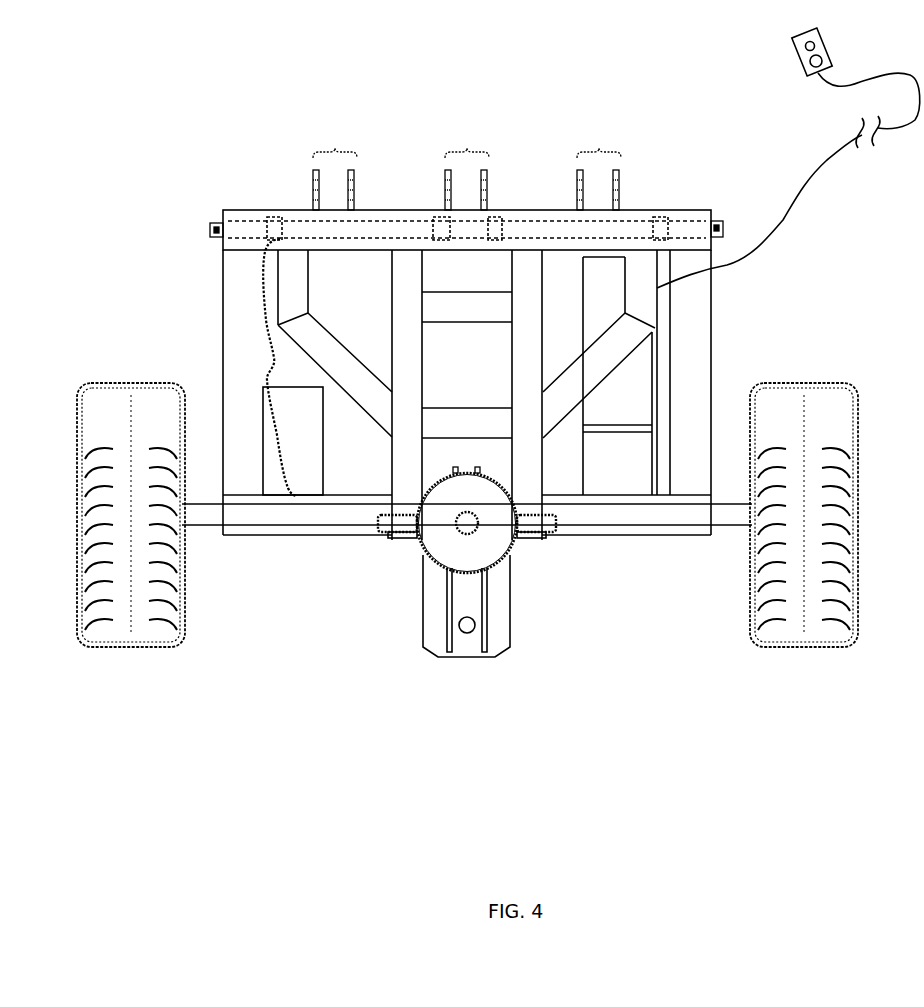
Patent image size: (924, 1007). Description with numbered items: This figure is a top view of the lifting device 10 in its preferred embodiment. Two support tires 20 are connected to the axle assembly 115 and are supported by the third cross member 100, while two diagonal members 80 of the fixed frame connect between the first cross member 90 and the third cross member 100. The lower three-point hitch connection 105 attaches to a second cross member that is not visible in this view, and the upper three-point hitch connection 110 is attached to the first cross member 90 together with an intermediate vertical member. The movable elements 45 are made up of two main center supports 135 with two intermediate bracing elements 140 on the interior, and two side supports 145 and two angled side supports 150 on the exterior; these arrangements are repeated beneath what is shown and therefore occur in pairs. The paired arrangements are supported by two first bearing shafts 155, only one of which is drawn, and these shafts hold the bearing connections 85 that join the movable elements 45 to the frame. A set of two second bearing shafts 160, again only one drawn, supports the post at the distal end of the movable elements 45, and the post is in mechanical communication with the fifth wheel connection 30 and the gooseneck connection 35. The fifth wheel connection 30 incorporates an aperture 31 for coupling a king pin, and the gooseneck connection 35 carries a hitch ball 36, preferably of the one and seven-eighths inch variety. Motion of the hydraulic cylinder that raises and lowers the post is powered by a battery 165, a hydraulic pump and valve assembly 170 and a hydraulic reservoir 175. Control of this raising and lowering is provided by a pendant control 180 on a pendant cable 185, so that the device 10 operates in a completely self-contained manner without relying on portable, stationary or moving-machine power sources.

The device 10 is at (157, 780).
The support tires 20 is at (127, 633).
The fifth wheel connection 30 is at (433, 500).
The aperture 31 is at (458, 532).
The gooseneck connection 35 is at (467, 643).
The hitch ball 36 is at (473, 625).
The movable elements 45 is at (258, 368).
The diagonal members 80 is at (240, 318).
The bearing connections 85 is at (272, 228).
The first cross member 90 is at (498, 212).
The third cross member 100 is at (320, 530).
The lower three-point hitch connection 105 is at (340, 138).
The upper three-point hitch connection 110 is at (478, 140).
The axle assembly 115 is at (193, 520).
The main center supports 135 is at (400, 325).
The intermediate bracing elements 140 is at (478, 318).
The side supports 145 is at (300, 295).
The angled side supports 150 is at (383, 398).
The first bearing shafts 155 is at (380, 230).
The second bearing shafts 160 is at (527, 525).
The battery 165 is at (270, 487).
The hydraulic pump and valve assembly 170 is at (653, 357).
The hydraulic reservoir 175 is at (618, 447).
The pendant control 180 is at (802, 55).
The pendant cable 185 is at (810, 173).